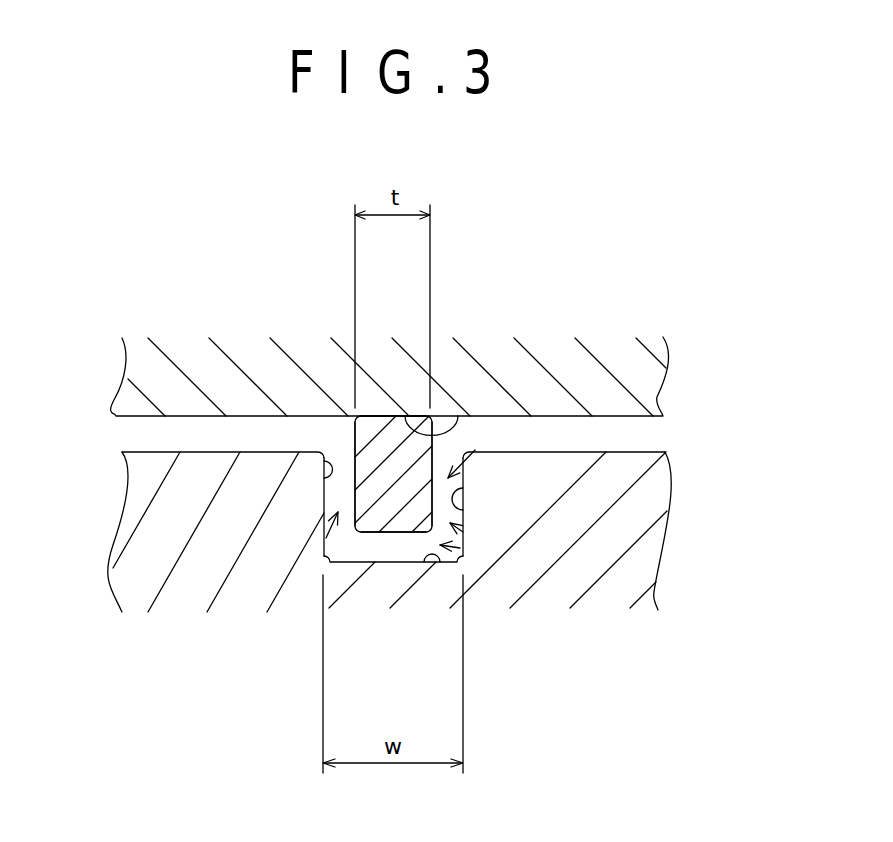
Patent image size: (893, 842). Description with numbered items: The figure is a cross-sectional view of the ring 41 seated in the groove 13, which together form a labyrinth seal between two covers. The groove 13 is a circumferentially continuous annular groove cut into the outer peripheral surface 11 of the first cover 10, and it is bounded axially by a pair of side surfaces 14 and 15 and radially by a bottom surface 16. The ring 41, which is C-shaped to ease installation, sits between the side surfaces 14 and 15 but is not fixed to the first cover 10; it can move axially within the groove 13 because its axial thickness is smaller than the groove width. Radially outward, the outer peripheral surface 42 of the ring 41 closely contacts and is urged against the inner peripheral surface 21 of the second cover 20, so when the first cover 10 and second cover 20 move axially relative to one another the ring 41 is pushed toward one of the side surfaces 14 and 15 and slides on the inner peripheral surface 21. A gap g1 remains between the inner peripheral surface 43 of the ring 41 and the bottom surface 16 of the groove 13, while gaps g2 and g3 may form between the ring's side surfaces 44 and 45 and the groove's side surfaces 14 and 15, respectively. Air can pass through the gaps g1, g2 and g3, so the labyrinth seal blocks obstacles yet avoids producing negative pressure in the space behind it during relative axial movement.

The first cover 10 is at (143, 587).
The outer peripheral surface 11 is at (585, 452).
The groove 13 is at (440, 450).
The side surface 14 is at (322, 457).
The side surface 15 is at (465, 508).
The bottom surface 16 is at (437, 566).
The second cover 20 is at (174, 380).
The inner peripheral surface 21 is at (458, 416).
The ring 41 is at (390, 520).
The outer peripheral surface 42 is at (377, 418).
The inner peripheral surface 43 is at (360, 532).
The side surface 44 is at (355, 435).
The side surface 45 is at (475, 450).
The gap g1 is at (460, 548).
The gap g2 is at (324, 542).
The gap g3 is at (463, 532).